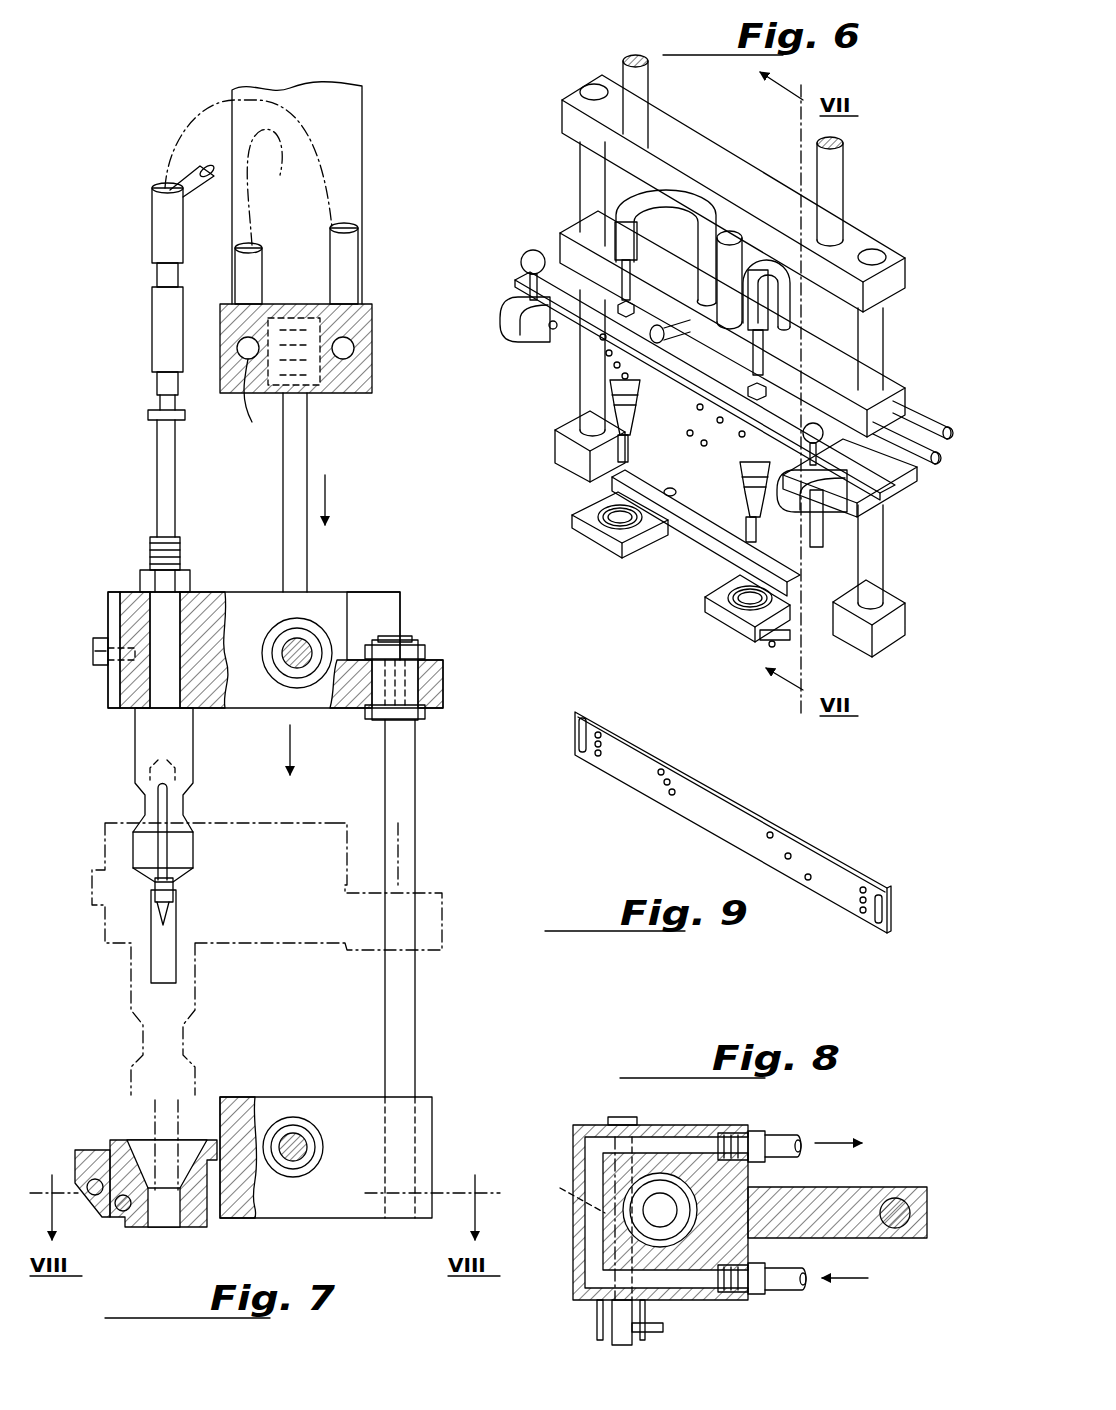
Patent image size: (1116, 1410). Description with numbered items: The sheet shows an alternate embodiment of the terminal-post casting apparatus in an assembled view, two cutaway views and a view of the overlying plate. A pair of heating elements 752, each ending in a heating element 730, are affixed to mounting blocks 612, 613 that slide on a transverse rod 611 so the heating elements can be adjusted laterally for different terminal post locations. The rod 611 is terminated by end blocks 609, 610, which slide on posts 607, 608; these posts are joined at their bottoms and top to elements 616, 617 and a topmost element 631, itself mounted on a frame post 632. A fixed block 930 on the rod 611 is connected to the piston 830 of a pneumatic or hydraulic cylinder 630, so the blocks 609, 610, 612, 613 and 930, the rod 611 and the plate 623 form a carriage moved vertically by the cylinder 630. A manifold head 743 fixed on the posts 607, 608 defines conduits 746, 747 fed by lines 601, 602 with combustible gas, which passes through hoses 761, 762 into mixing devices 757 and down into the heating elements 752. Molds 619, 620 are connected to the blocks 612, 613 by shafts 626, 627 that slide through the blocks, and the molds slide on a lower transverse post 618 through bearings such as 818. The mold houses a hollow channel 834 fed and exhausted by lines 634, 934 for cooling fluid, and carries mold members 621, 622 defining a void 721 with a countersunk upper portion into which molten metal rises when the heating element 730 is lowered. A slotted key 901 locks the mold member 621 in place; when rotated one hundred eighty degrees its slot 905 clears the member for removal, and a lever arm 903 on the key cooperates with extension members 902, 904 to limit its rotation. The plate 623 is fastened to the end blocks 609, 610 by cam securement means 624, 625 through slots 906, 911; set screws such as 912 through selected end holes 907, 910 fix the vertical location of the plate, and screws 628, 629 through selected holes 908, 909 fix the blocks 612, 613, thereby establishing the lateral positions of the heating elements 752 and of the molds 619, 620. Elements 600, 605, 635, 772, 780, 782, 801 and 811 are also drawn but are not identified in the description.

In FIG. 6, the U-shaped tube 600 is at (640, 190).
In FIG. 6, the feed line 601 is at (935, 465).
In FIG. 6, the feed line 602 is at (910, 415).
In FIG. 6, the tube 605 is at (690, 222).
In FIG. 6, the post 607 is at (878, 315).
In FIG. 6, the post 608 is at (578, 160).
In FIG. 6, the terminating block 609 is at (900, 485).
In FIG. 6, the terminating block 610 is at (532, 240).
In FIG. 7, the transverse rod 611 is at (292, 668).
In FIG. 6, the transverse rod 611 is at (560, 336).
In FIG. 6, the mounting block 612 is at (580, 335).
In FIG. 7, the mounting block 613 is at (248, 600).
In FIG. 6, the mounting block 613 is at (800, 392).
In FIG. 6, the connecting element 616 is at (565, 455).
In FIG. 6, the connecting element 617 is at (885, 640).
In FIG. 7, the transverse post 618 is at (295, 1117).
In FIG. 6, the transverse post 618 is at (720, 538).
In FIG. 7, the mold 619 is at (90, 1153).
In FIG. 6, the mold 619 is at (578, 536).
In FIG. 7, the mold 620 is at (250, 1210).
In FIG. 6, the mold 620 is at (730, 612).
In FIG. 8, the mold 620 is at (592, 1125).
In FIG. 6, the mold member 621 is at (603, 510).
In FIG. 7, the mold member 622 is at (128, 1140).
In FIG. 6, the mold member 622 is at (712, 600).
In FIG. 8, the mold member 622 is at (685, 1212).
In FIG. 7, the overlying plate 623 is at (112, 606).
In FIG. 6, the overlying plate 623 is at (648, 84).
In FIG. 9, the overlying plate 623 is at (725, 815).
In FIG. 6, the cam securement means 624 is at (500, 312).
In FIG. 6, the cam securement means 625 is at (870, 495).
In FIG. 6, the shaft 626 is at (640, 370).
In FIG. 7, the shaft 627 is at (417, 760).
In FIG. 6, the shaft 627 is at (823, 508).
In FIG. 8, the shaft 627 is at (895, 1230).
In FIG. 6, the screw 628 is at (612, 347).
In FIG. 7, the screw 629 is at (98, 670).
In FIG. 6, the screw 629 is at (732, 435).
In FIG. 7, the cylinder 630 is at (346, 128).
In FIG. 6, the cylinder 630 is at (735, 250).
In FIG. 6, the topmost element 631 is at (856, 225).
In FIG. 6, the post 632 is at (843, 162).
In FIG. 6, the line 634 is at (680, 515).
In FIG. 8, the line 634 is at (790, 1285).
In FIG. 6, the fitting 635 is at (815, 610).
In FIG. 7, the void 721 is at (166, 1222).
In FIG. 6, the void 721 is at (618, 522).
In FIG. 8, the void 721 is at (660, 1210).
In FIG. 7, the heating element 730 is at (168, 945).
In FIG. 6, the heating element 730 is at (629, 450).
In FIG. 7, the manifold head 743 is at (364, 378).
In FIG. 6, the manifold head 743 is at (890, 385).
In FIG. 7, the conduit 746 is at (252, 422).
In FIG. 7, the conduit 747 is at (350, 350).
In FIG. 7, the heating element 752 is at (135, 738).
In FIG. 6, the heating element 752 is at (636, 420).
In FIG. 7, the mixing device 757 is at (157, 342).
In FIG. 6, the mixing device 757 is at (600, 230).
In FIG. 7, the hose 761 is at (160, 235).
In FIG. 6, the hose 761 is at (792, 298).
In FIG. 7, the hose 762 is at (242, 283).
In FIG. 6, the hose 762 is at (765, 270).
In FIG. 7, the rod 772 is at (157, 476).
In FIG. 7, the plunger 780 is at (168, 852).
In FIG. 7, the valve member 782 is at (175, 892).
In FIG. 7, the fitting 801 is at (415, 648).
In FIG. 7, the bore 811 is at (300, 640).
In FIG. 7, the bearing 818 is at (297, 1162).
In FIG. 7, the piston 830 is at (283, 486).
In FIG. 6, the piston 830 is at (740, 366).
In FIG. 7, the hollow channel 834 is at (97, 1195).
In FIG. 8, the hollow channel 834 is at (595, 1240).
In FIG. 7, the slotted key 901 is at (125, 1212).
In FIG. 8, the slotted key 901 is at (622, 1345).
In FIG. 8, the extension member 902 is at (648, 1313).
In FIG. 8, the lever arm 903 is at (656, 1334).
In FIG. 8, the extension member 904 is at (597, 1316).
In FIG. 8, the slot 905 is at (561, 1193).
In FIG. 9, the slot 906 is at (884, 912).
In FIG. 9, the set of openings 907 is at (850, 895).
In FIG. 9, the set of openings 908 is at (777, 865).
In FIG. 9, the set of openings 909 is at (653, 792).
In FIG. 9, the set of openings 910 is at (612, 765).
In FIG. 9, the slot 911 is at (579, 730).
In FIG. 6, the set screw 912 is at (548, 328).
In FIG. 7, the fixed block 930 is at (376, 600).
In FIG. 6, the fixed block 930 is at (700, 370).
In FIG. 8, the line 934 is at (785, 1140).